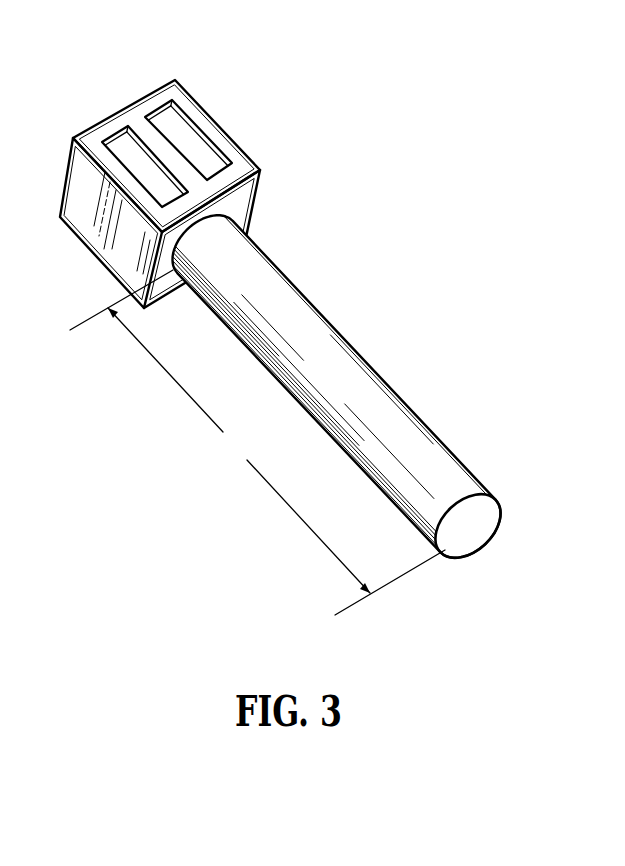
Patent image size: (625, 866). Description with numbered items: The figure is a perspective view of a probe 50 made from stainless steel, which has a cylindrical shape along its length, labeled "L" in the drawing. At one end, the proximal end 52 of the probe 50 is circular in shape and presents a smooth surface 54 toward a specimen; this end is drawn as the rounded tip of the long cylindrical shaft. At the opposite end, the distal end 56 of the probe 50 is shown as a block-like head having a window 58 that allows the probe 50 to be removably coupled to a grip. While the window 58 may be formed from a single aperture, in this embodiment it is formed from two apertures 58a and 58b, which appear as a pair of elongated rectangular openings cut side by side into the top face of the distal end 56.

The probe 50 is at (293, 316).
The proximal end 52 is at (362, 392).
The smooth surface 54 is at (475, 532).
The distal end 56 is at (165, 162).
The window 58 is at (165, 175).
The aperture 58a is at (197, 133).
The aperture 58b is at (140, 174).